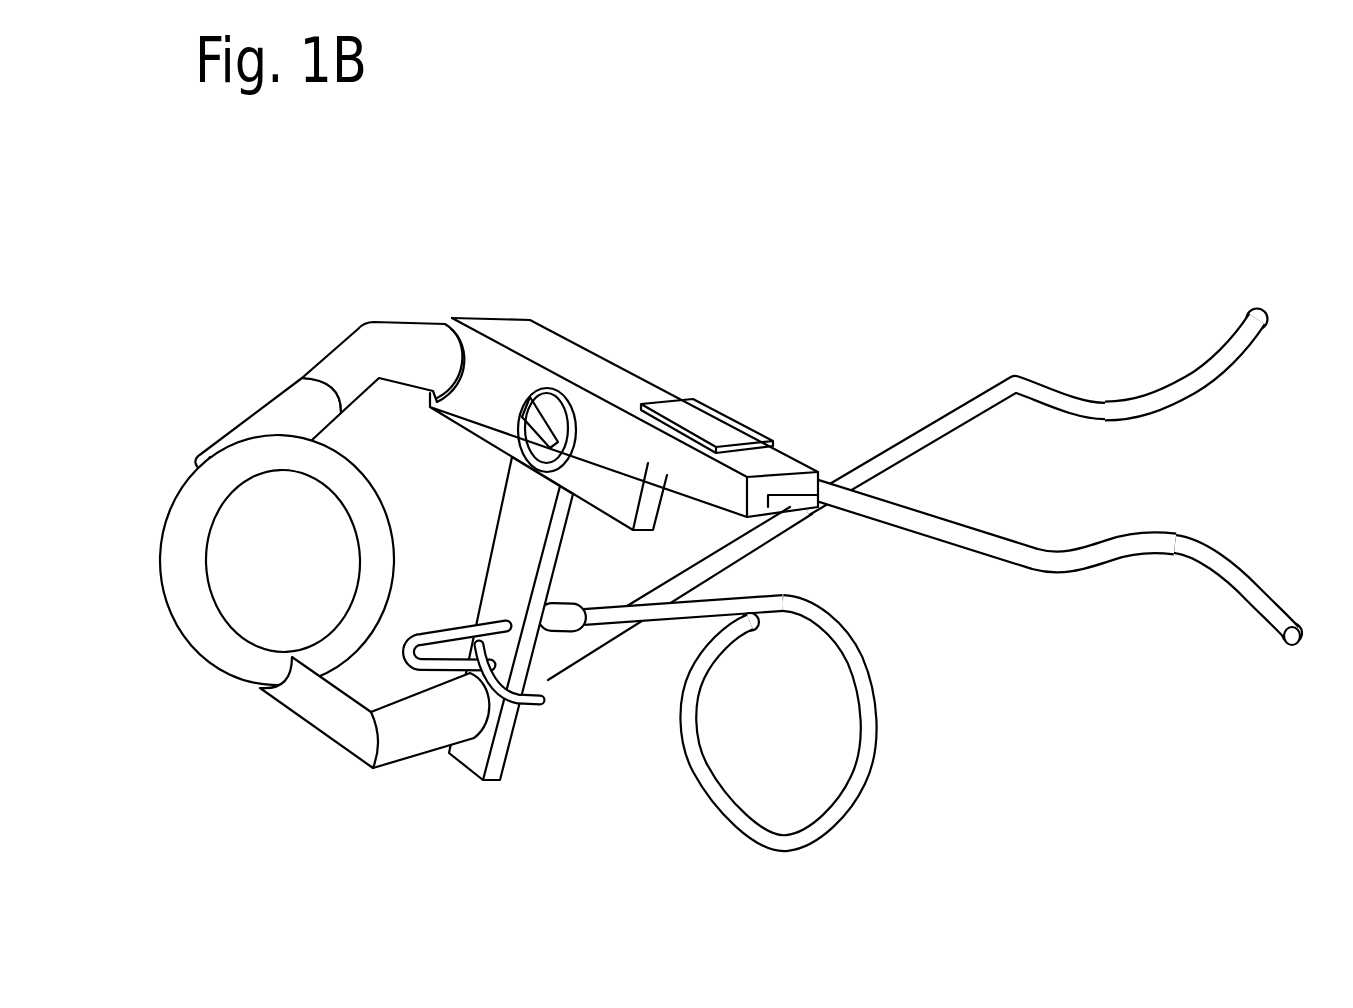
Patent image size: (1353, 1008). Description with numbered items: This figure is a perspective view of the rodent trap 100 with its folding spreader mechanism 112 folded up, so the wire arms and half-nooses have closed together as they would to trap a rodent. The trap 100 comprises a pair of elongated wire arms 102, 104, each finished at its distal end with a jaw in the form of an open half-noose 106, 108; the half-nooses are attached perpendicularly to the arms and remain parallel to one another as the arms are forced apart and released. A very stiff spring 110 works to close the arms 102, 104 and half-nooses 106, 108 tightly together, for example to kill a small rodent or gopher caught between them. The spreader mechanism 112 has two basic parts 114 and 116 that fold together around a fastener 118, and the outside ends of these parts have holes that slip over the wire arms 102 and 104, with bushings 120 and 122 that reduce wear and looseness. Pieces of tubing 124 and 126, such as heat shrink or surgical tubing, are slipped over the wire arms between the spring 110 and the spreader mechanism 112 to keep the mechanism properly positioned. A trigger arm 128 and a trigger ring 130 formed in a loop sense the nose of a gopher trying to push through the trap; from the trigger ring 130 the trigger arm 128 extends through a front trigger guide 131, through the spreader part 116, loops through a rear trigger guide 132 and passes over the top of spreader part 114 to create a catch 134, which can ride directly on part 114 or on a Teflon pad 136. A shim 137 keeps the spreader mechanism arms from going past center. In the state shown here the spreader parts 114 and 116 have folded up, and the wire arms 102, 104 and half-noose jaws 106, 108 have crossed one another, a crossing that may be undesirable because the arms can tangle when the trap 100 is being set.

The rodent trap 100 is at (815, 176).
The wire arm 102 is at (927, 532).
The wire arm 104 is at (890, 440).
The half-noose 106 is at (1168, 547).
The half-noose 108 is at (1167, 388).
The spring 110 is at (331, 622).
The spreader mechanism 112 is at (640, 452).
The spreader mechanism part 114 is at (621, 453).
The spreader mechanism part 116 is at (532, 567).
The fastener 118 is at (516, 421).
The bushing 120 is at (447, 323).
The bushing 122 is at (470, 738).
The tubing 124 is at (290, 392).
The tubing 126 is at (298, 708).
The trigger arm 128 is at (675, 607).
The trigger ring 130 is at (867, 677).
The front trigger guide 131 is at (558, 607).
The rear trigger guide 132 is at (441, 632).
The catch 134 is at (534, 710).
The Teflon pad 136 is at (718, 417).
The shim 137 is at (805, 502).